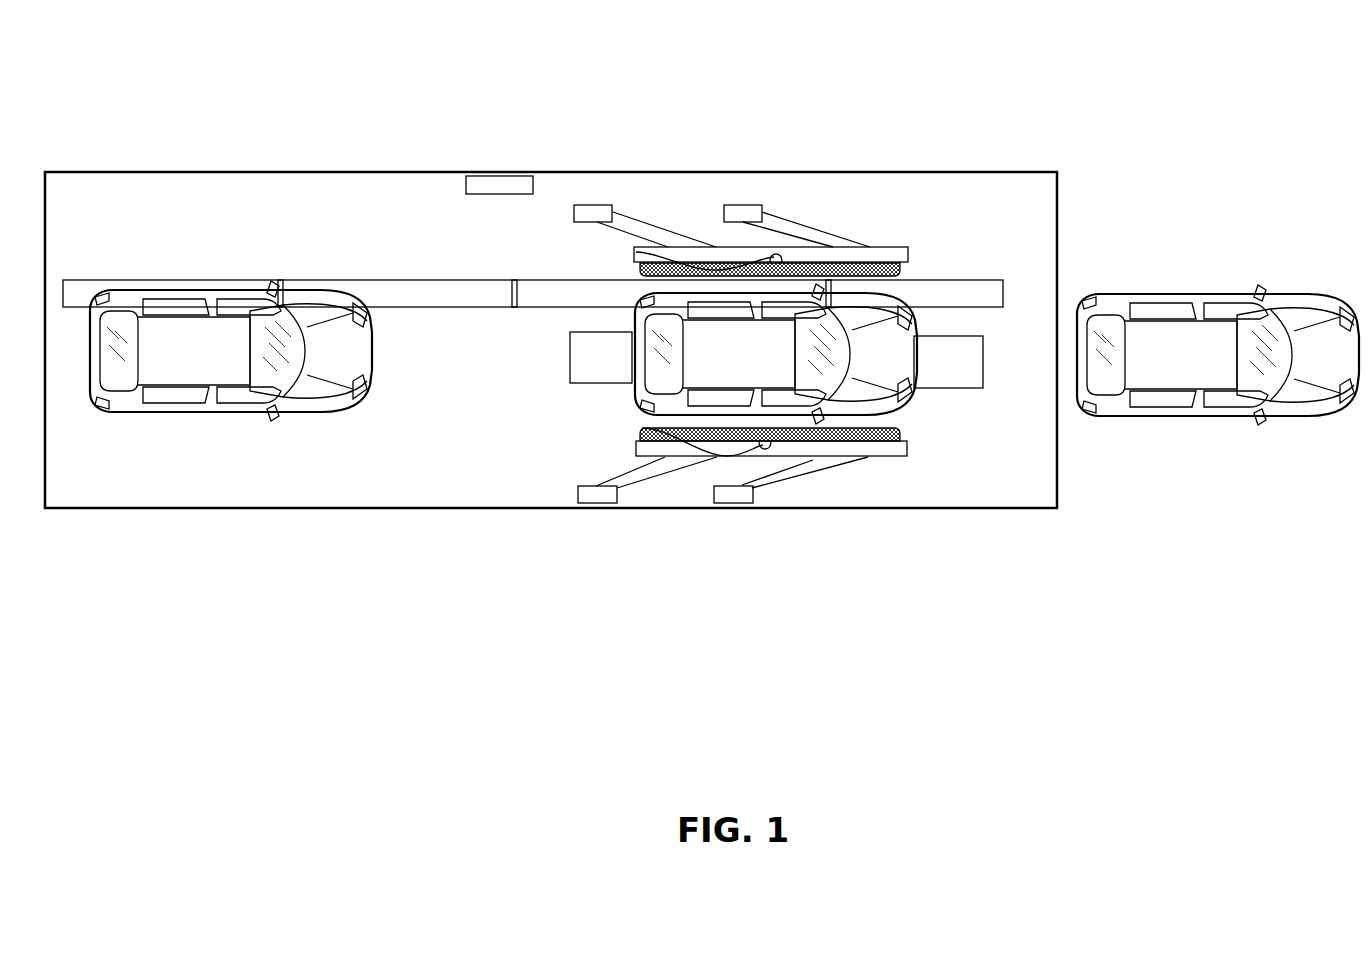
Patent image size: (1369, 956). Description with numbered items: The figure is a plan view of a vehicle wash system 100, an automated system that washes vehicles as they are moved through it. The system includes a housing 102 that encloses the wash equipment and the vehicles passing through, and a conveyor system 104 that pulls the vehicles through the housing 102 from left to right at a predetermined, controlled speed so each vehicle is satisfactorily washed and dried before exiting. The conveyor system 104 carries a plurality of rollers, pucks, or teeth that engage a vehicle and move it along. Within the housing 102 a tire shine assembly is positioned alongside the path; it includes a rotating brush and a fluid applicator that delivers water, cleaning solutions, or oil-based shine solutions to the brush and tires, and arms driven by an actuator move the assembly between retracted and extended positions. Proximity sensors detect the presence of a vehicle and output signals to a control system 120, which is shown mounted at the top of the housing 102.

The vehicle wash system 100 is at (433, 64).
The housing 102 is at (211, 172).
The conveyor system 104 is at (380, 280).
The control system 120 is at (497, 176).